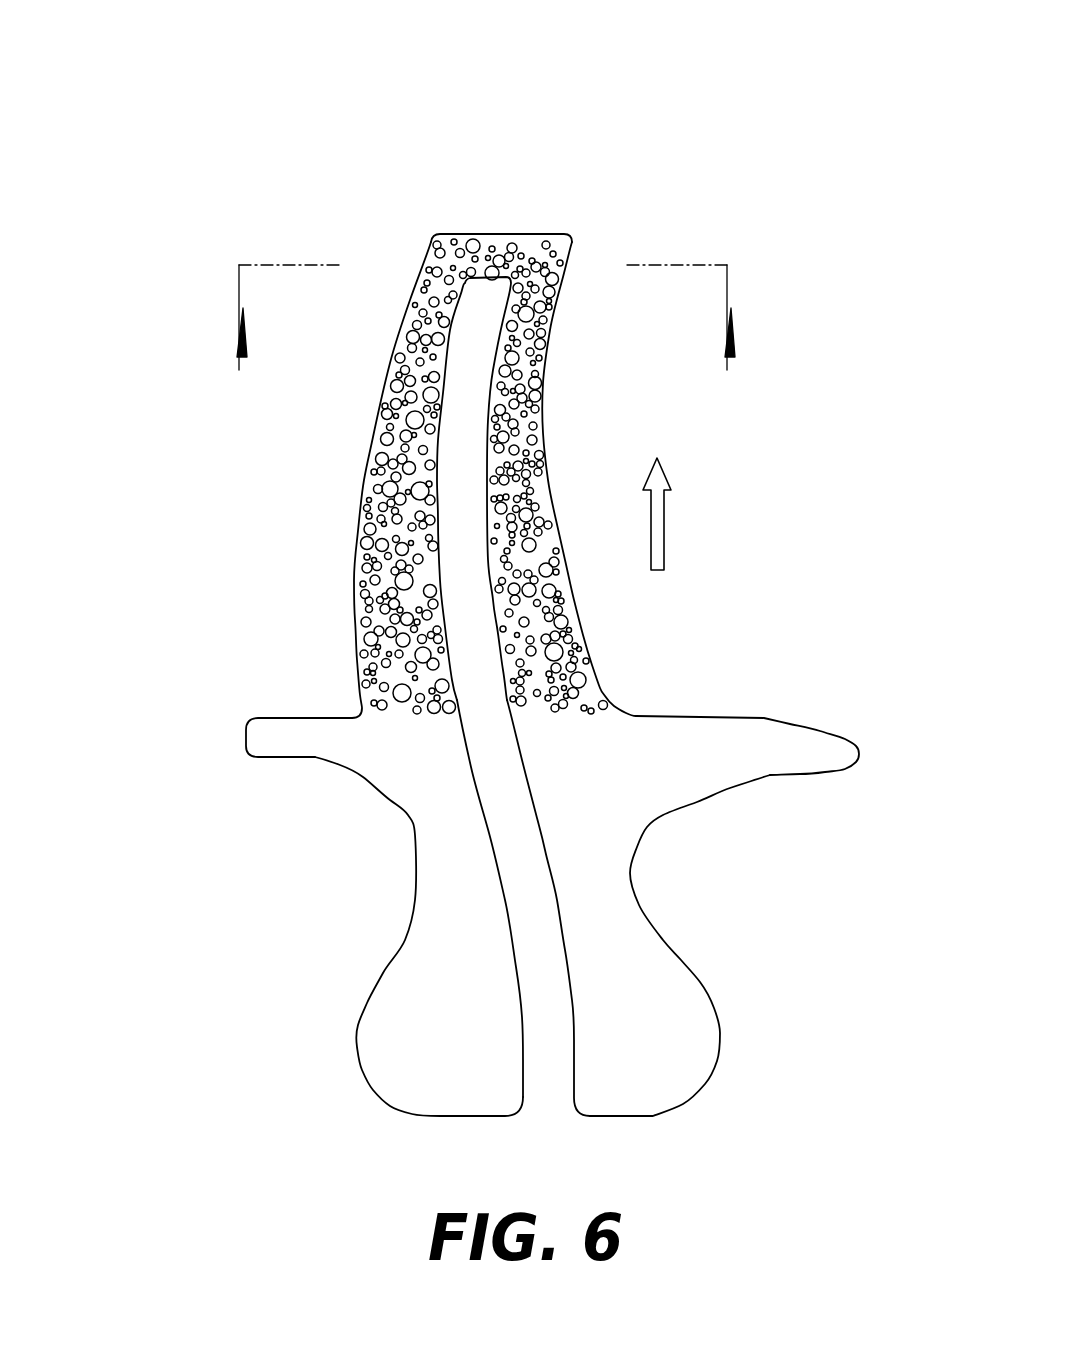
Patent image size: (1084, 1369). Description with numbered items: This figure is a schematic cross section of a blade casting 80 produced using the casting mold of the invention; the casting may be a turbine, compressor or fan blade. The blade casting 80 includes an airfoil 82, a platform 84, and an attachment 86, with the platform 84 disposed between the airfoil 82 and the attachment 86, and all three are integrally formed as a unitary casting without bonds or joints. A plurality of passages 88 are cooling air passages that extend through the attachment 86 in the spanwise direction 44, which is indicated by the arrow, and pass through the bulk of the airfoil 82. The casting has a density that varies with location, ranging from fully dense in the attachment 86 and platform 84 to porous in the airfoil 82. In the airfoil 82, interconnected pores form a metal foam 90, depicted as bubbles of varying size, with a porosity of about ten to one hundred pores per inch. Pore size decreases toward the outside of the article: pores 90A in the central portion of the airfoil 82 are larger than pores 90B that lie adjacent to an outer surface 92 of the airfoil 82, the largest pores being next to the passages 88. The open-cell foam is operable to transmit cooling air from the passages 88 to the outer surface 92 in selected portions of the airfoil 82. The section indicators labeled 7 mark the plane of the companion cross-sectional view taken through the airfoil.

The blade casting 80 is at (643, 108).
The airfoil 82 is at (510, 233).
The platform 84 is at (776, 719).
The attachment 86 is at (701, 985).
The passages 88 is at (573, 1041).
The metal foam 90 is at (428, 745).
The pores in a central portion of the airfoil 90A is at (363, 487).
The pores adjacent to the outer surface 90B is at (394, 357).
The outer surface 92 is at (546, 383).
The spanwise direction 44 is at (667, 525).
The section line 7- 7 is at (483, 344).